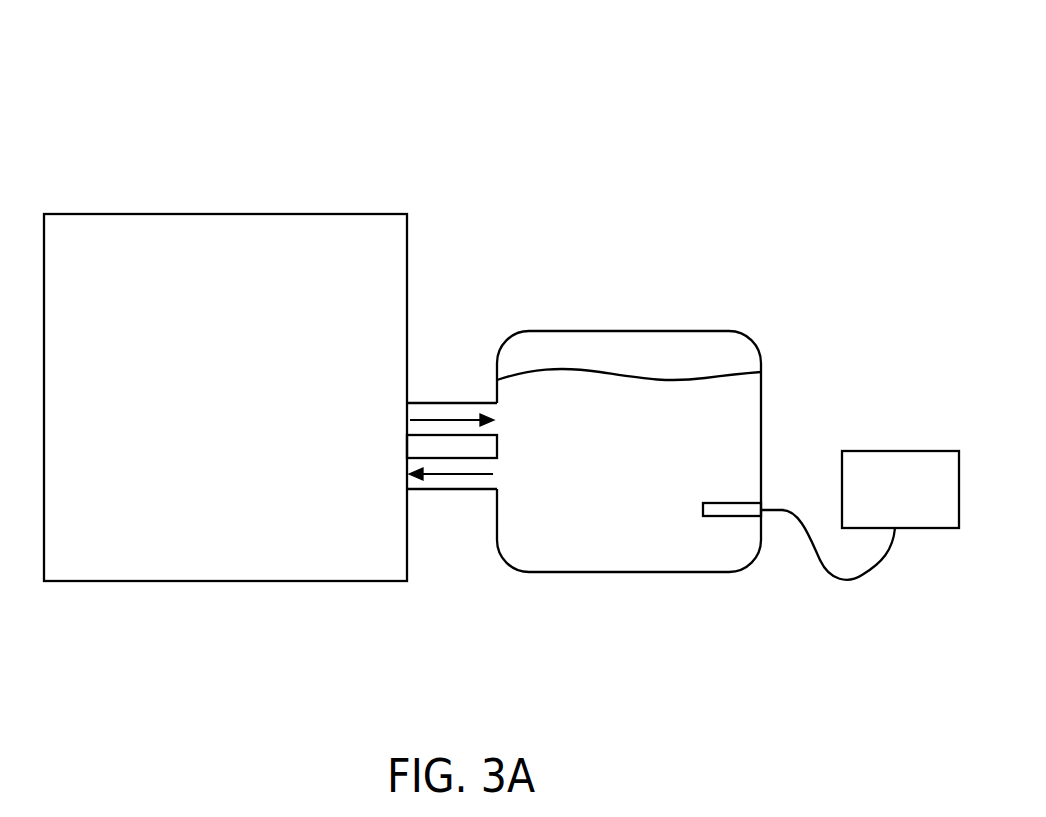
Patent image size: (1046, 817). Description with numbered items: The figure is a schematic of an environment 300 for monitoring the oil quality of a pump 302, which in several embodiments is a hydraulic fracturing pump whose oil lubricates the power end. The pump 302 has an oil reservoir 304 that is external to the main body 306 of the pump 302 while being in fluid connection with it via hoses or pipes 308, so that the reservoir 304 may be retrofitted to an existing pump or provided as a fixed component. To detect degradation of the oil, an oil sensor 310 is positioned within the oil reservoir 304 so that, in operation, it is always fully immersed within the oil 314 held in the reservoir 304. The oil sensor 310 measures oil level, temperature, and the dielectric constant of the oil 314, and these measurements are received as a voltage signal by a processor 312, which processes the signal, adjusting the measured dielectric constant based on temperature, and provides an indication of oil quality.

The environment 300 is at (817, 317).
The pump 302 is at (358, 122).
The oil reservoir 304 is at (579, 331).
The main body 306 is at (227, 214).
The hoses or pipes 308 is at (453, 403).
The oil sensor 310 is at (732, 516).
The processor 312 is at (902, 451).
The oil 314 is at (667, 405).